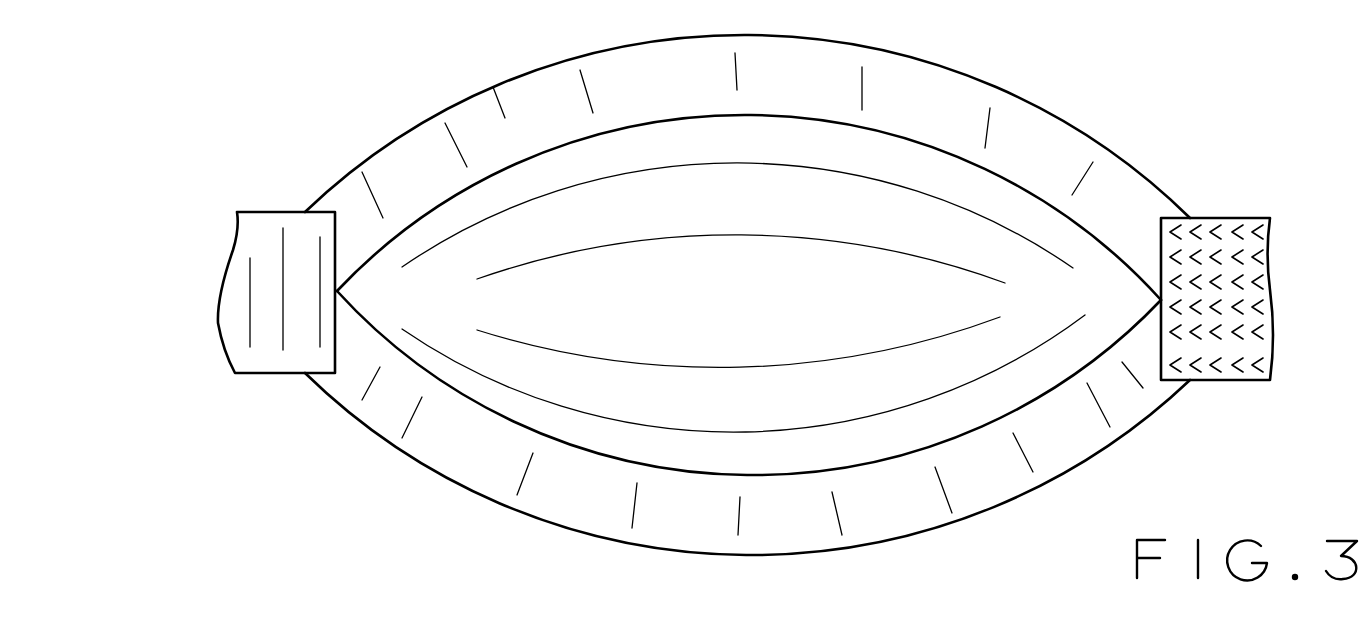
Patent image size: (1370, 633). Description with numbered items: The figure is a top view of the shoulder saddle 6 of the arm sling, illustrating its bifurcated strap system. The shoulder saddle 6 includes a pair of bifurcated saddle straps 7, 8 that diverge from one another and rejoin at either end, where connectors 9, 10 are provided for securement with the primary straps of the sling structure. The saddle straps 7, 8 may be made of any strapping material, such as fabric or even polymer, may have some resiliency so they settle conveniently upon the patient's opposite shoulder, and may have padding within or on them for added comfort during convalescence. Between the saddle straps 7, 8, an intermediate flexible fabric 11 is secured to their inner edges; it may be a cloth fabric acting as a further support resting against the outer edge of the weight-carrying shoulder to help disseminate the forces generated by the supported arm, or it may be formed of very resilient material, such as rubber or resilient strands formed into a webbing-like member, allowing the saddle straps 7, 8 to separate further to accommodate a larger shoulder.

The shoulder saddle 6 is at (1013, 66).
The bifurcated saddle strap 7 is at (473, 453).
The bifurcated saddle strap 8 is at (495, 85).
The connector 9 is at (277, 212).
The connector 10 is at (1227, 218).
The intermediate flexible fabric 11 is at (755, 318).